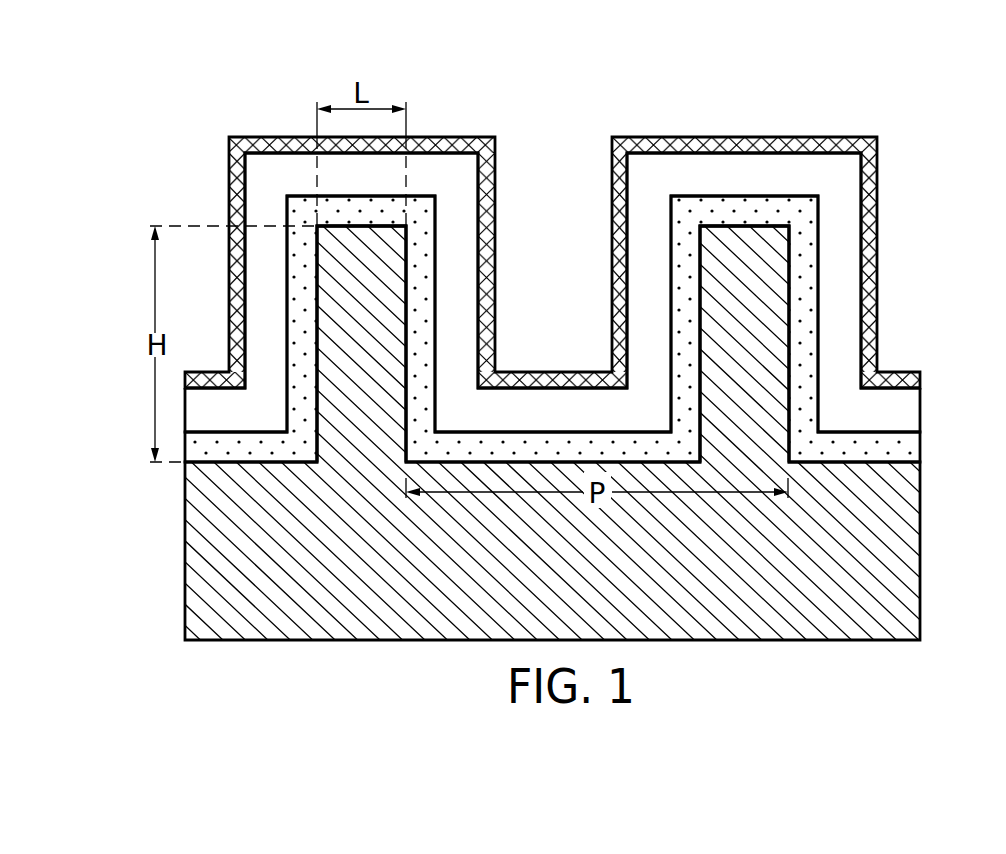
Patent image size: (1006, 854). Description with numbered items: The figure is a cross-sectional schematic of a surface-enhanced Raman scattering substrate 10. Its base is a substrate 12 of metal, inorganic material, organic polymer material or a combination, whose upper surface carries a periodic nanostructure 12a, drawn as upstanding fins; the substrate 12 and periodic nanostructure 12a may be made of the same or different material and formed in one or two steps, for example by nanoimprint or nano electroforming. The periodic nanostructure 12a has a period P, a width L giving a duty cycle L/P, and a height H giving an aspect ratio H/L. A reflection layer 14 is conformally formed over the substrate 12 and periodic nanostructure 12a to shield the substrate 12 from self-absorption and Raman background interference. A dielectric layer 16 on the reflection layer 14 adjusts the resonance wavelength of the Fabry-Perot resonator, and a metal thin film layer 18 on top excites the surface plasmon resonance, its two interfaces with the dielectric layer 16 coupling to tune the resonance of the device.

The surface-enhanced Raman scattering substrate 10 is at (903, 79).
The substrate 12 is at (908, 548).
The periodic nanostructure 12a is at (378, 316).
The reflection layer 14 is at (908, 445).
The dielectric layer 16 is at (908, 410).
The metal thin film layer 18 is at (908, 380).